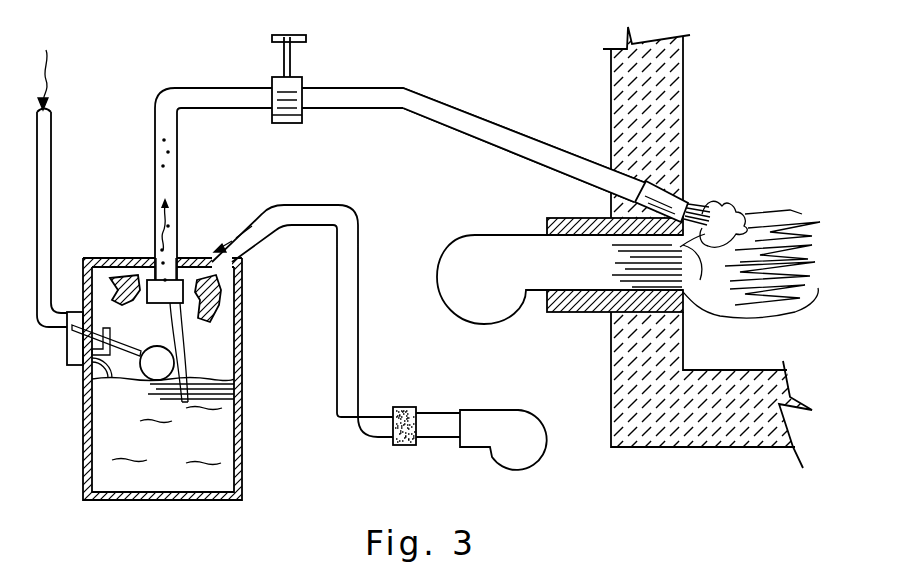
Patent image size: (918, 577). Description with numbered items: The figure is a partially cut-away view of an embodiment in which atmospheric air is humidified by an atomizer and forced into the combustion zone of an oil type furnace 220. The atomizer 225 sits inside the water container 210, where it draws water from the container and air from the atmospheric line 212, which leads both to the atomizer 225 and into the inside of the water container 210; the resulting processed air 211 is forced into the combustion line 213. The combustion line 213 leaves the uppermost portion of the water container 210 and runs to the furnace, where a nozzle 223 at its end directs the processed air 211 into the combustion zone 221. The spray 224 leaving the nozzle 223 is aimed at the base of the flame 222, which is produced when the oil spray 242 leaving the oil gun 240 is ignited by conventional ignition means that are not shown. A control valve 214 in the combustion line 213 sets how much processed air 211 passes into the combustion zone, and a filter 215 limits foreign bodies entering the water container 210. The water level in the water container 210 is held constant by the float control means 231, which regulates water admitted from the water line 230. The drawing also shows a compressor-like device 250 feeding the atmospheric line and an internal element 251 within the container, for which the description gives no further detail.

The water container 210 is at (83, 443).
The processed air 211 is at (172, 258).
The atmospheric line 212 is at (360, 290).
The combustion line 213 is at (220, 88).
The control valve 214 is at (303, 82).
The filter 215 is at (392, 442).
The oil type furnace 220 is at (610, 87).
The combustion zone 221 is at (845, 326).
The flame 222 is at (770, 288).
The nozzle 223 is at (652, 198).
The spray 224 is at (702, 214).
The atomizer 225 is at (176, 292).
The water line 230 is at (51, 183).
The float control means 231 is at (165, 355).
The oil gun 240 is at (522, 266).
The oil spray 242 is at (688, 292).
The compressor 250 is at (478, 408).
The baffle 251 is at (215, 317).